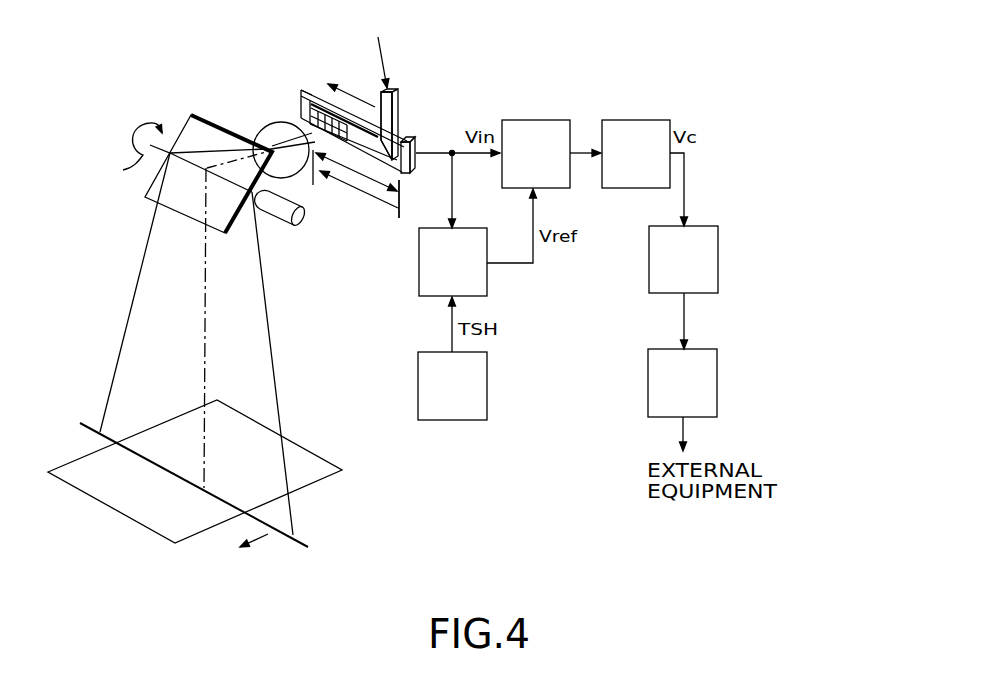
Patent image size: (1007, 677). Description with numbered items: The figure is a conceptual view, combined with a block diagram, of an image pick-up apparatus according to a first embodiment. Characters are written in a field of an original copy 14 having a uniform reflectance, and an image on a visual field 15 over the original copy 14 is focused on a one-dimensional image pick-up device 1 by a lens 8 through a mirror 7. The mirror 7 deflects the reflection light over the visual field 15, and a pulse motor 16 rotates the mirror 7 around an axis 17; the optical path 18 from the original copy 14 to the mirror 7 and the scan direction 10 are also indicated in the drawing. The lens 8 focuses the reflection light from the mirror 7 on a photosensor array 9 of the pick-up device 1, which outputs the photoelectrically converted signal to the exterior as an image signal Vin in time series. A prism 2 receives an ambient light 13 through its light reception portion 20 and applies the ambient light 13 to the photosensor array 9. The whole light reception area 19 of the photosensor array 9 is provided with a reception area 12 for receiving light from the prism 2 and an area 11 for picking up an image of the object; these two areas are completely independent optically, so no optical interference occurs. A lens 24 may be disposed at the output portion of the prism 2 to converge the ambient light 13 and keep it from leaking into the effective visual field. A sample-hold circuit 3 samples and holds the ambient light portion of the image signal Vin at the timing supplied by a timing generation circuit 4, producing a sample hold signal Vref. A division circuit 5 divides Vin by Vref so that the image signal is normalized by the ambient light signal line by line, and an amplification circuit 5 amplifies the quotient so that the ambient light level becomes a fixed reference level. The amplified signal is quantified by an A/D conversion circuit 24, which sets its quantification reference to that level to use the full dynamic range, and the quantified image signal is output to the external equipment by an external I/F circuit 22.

The one-dimensional image pick-up device 1 is at (418, 142).
The prism 2 is at (402, 108).
The sample-hold circuit 3 is at (419, 275).
The timing generation circuit 4 is at (418, 399).
The division circuit 5 is at (533, 119).
The mirror 7 is at (198, 117).
The lens 8 is at (264, 122).
The photosensor array 9 is at (312, 91).
The scan direction arrow 10 is at (339, 90).
The area for picking up an image of the object 11 is at (320, 174).
The reception area 12 is at (399, 212).
The ambient light 13 is at (382, 47).
The original copy 14 is at (163, 515).
The visual field 15 is at (138, 434).
The pulse motor 16 is at (290, 230).
The axis 17 is at (184, 161).
The optical path 18 is at (203, 347).
The whole light reception area 19 is at (362, 191).
The light reception portion 20 is at (394, 90).
The external I/F circuit 22 is at (693, 349).
The lens 24 is at (690, 225).